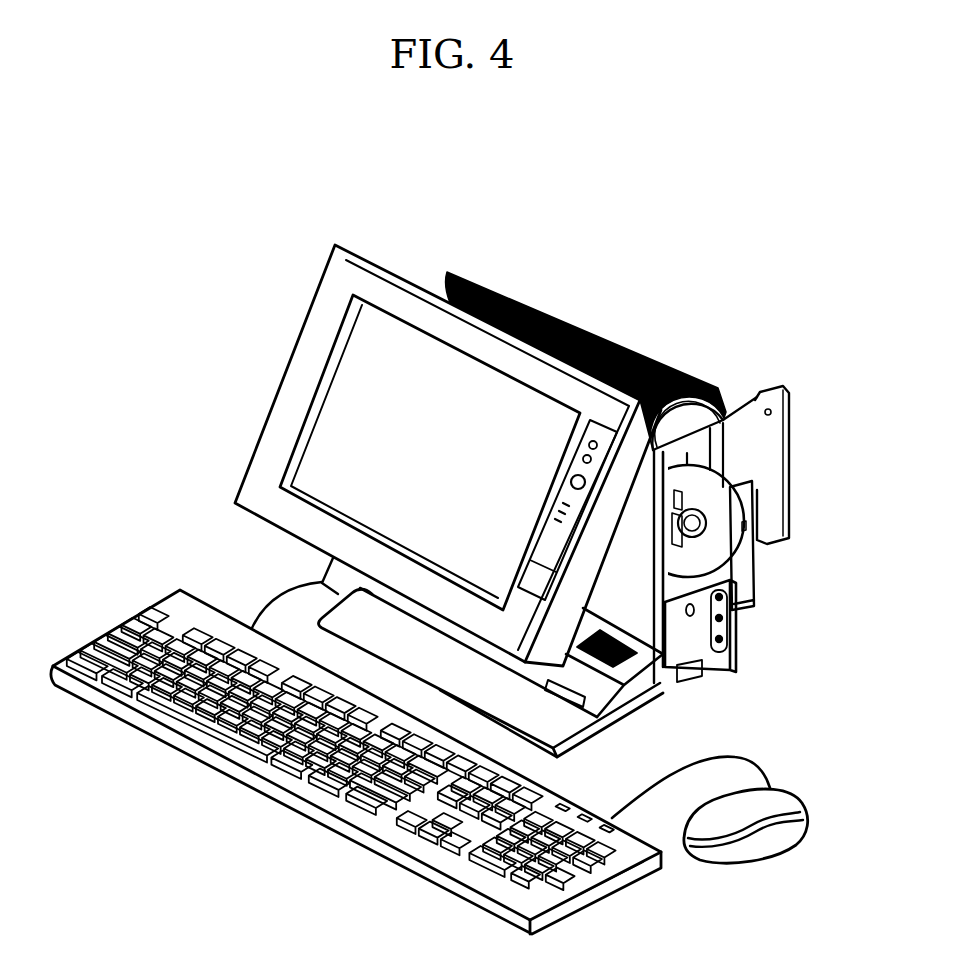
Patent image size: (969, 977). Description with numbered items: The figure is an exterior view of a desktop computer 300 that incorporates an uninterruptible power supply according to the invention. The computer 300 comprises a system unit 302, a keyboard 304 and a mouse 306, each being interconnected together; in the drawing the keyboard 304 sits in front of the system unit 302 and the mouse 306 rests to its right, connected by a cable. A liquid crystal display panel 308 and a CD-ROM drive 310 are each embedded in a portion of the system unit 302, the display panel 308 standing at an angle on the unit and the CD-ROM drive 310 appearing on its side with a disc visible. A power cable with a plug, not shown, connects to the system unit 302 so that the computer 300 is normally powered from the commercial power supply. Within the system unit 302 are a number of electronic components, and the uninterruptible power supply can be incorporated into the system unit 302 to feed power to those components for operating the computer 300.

The desktop computer 300 is at (636, 286).
The system unit 302 is at (740, 660).
The keyboard 304 is at (184, 756).
The mouse 306 is at (790, 782).
The liquid crystal display panel 308 is at (320, 341).
The CD-ROM drive 310 is at (758, 579).